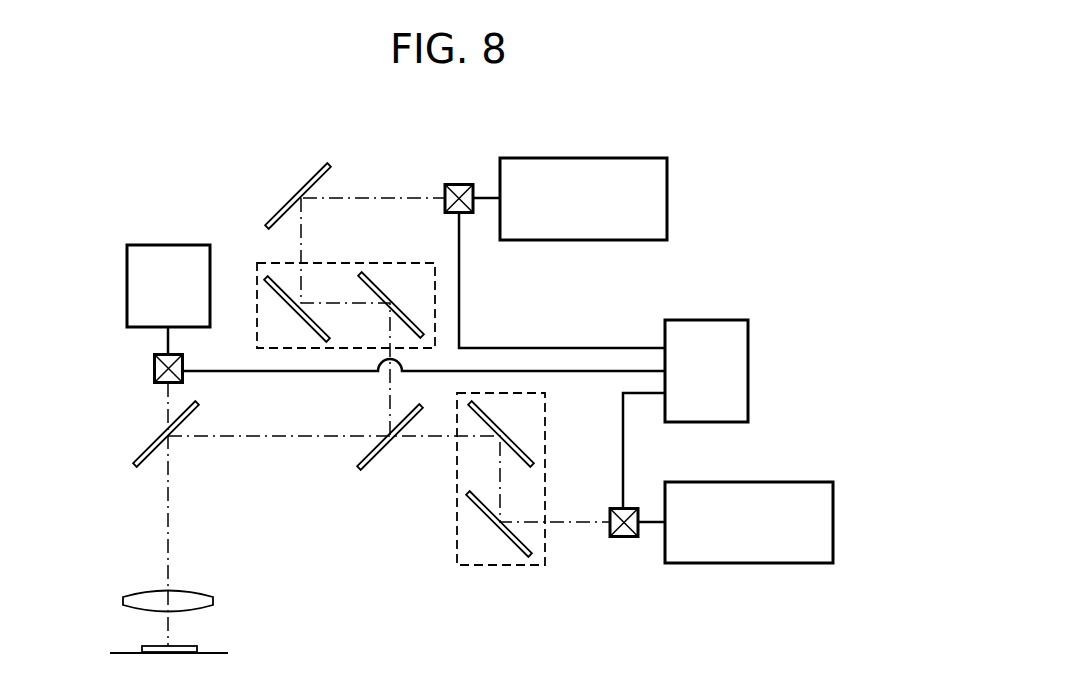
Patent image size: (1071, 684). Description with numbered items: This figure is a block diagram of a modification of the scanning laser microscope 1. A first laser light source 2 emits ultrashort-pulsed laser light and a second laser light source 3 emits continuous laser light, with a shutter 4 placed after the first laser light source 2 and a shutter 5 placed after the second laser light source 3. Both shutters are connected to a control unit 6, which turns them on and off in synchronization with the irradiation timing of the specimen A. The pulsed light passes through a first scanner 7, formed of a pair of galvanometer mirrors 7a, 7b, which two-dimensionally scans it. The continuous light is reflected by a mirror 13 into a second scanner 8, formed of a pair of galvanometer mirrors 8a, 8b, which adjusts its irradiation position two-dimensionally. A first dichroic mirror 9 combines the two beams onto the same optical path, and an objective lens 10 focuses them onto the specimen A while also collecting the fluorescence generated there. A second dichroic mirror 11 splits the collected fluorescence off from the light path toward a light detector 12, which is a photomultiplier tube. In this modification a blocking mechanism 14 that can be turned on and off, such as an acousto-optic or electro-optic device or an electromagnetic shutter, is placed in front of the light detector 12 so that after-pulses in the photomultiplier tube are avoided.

The scanning laser microscope 1 is at (728, 116).
The first laser light source 2 is at (748, 563).
The second laser light source 3 is at (667, 195).
The shutter 4 is at (624, 537).
The shutter 5 is at (459, 185).
The control unit 6 is at (748, 356).
The first scanner 7 is at (457, 548).
The galvanometer mirror 7a is at (512, 542).
The galvanometer mirror 7b is at (524, 445).
The second scanner 8 is at (257, 272).
The galvanometer mirror 8a is at (300, 318).
The galvanometer mirror 8b is at (383, 285).
The first dichroic mirror 9 is at (378, 452).
The objective lens 10 is at (186, 594).
The second dichroic mirror 11 is at (142, 452).
The light detector 12 is at (150, 245).
The mirror 13 is at (308, 178).
The blocking mechanism 14 is at (154, 370).
The specimen A is at (197, 648).